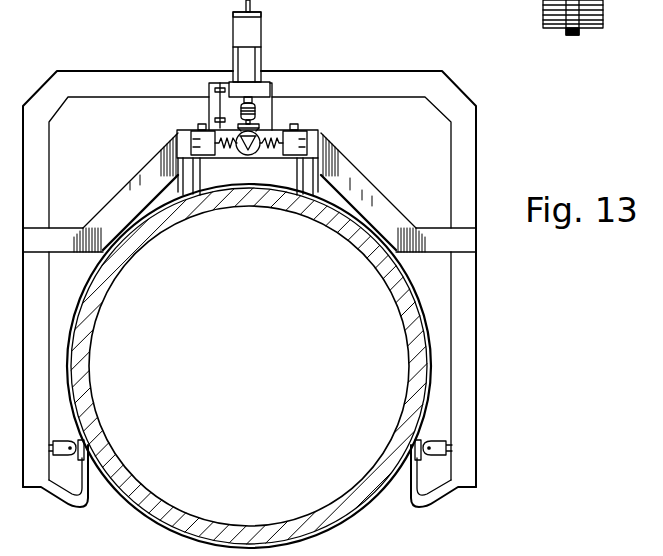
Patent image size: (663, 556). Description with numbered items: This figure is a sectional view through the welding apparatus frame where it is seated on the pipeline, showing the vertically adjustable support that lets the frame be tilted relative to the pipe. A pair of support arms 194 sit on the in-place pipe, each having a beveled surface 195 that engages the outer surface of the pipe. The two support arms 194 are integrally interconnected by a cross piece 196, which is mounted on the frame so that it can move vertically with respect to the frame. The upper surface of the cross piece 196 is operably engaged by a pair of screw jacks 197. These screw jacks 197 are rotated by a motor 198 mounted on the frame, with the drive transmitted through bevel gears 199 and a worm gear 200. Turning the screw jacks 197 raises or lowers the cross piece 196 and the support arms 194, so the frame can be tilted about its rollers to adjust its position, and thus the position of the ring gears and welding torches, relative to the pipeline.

The support arms 194 is at (178, 177).
The beveled surfaces 195 is at (191, 188).
The cross piece 196 is at (221, 160).
The screw jacks 197 is at (199, 139).
The motor 198 is at (233, 62).
The bevel gears 199 is at (264, 129).
The worm gear 200 is at (238, 153).